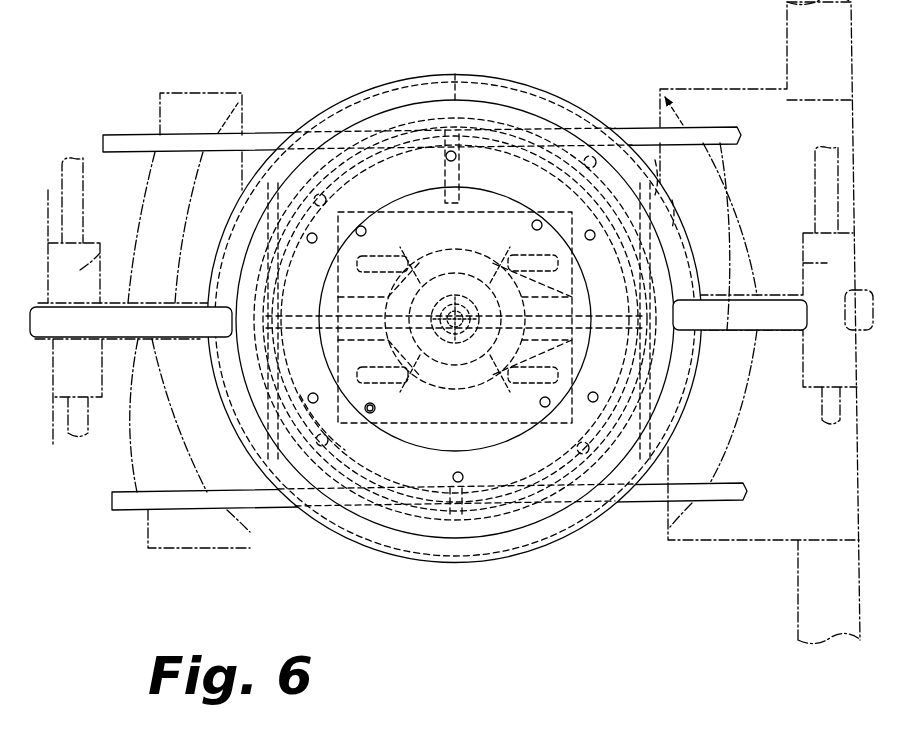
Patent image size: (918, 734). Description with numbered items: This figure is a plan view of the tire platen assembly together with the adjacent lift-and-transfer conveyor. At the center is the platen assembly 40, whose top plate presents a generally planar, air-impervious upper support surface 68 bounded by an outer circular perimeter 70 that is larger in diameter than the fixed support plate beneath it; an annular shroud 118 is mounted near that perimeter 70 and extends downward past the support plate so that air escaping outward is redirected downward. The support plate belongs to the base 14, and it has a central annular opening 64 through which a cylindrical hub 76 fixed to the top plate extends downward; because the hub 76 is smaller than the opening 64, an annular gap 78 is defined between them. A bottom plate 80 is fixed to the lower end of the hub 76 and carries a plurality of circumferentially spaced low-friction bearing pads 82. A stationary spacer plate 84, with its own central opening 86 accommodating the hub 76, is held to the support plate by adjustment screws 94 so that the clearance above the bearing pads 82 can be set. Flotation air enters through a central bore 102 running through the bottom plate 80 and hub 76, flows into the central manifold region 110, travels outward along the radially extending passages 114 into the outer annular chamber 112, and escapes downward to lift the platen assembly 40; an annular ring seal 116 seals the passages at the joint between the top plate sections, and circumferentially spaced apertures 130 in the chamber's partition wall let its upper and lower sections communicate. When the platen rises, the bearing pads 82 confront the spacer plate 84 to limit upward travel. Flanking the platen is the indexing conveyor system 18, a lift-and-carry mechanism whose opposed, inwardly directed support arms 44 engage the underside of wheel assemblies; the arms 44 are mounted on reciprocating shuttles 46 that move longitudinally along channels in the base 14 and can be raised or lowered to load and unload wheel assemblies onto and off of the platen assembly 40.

The base 14 is at (205, 545).
The indexing conveyor system 18 is at (66, 442).
The platen assembly 40 is at (567, 95).
The support arms 44 is at (725, 375).
The reciprocating shuttles 46 is at (105, 245).
The central annular opening 64 is at (370, 408).
The upper support surface 68 is at (417, 110).
The outer circular perimeter 70 is at (508, 105).
The cylindrical hub 76 is at (432, 252).
The annular gap 78 is at (337, 298).
The bottom plate 80 is at (464, 180).
The bearing pads 82 is at (412, 236).
The spacer plate 84 is at (357, 212).
The central opening 86 is at (463, 387).
The adjustment screws 94 is at (523, 458).
The central bore 102 is at (515, 301).
The central manifold region 110 is at (467, 305).
The outer annular chamber 112 is at (653, 177).
The radially extending passages 114 is at (320, 407).
The annular ring seal 116 is at (680, 213).
The annular shroud 118 is at (326, 118).
The apertures 130 is at (463, 130).